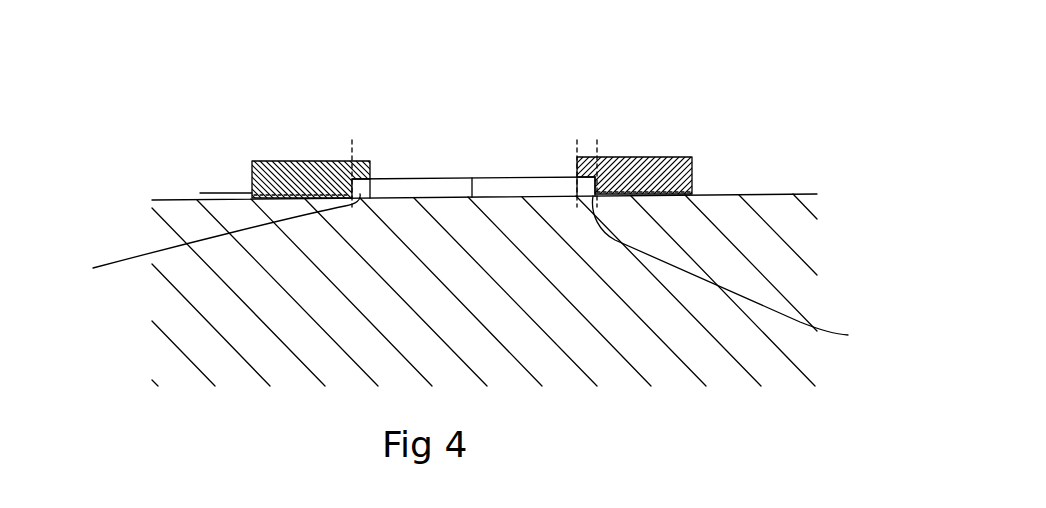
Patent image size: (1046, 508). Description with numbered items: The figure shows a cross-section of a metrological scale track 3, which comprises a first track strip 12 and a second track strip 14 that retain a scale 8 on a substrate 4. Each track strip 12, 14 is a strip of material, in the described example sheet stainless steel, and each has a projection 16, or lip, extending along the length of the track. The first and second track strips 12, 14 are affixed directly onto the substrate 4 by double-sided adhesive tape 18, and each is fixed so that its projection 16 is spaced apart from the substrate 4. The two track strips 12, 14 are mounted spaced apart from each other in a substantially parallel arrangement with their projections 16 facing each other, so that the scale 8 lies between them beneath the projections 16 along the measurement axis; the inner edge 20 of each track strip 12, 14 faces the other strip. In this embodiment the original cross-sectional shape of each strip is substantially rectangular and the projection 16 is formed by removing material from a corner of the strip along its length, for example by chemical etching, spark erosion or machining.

The metrological scale track 3 is at (757, 78).
The substrate 4 is at (812, 238).
The scale 8 is at (407, 177).
The first track strip 12 is at (303, 158).
The second track strip 14 is at (660, 156).
The projection 16 is at (362, 150).
The double-sided adhesive tape 18 is at (747, 182).
The inner edge 20 is at (466, 270).